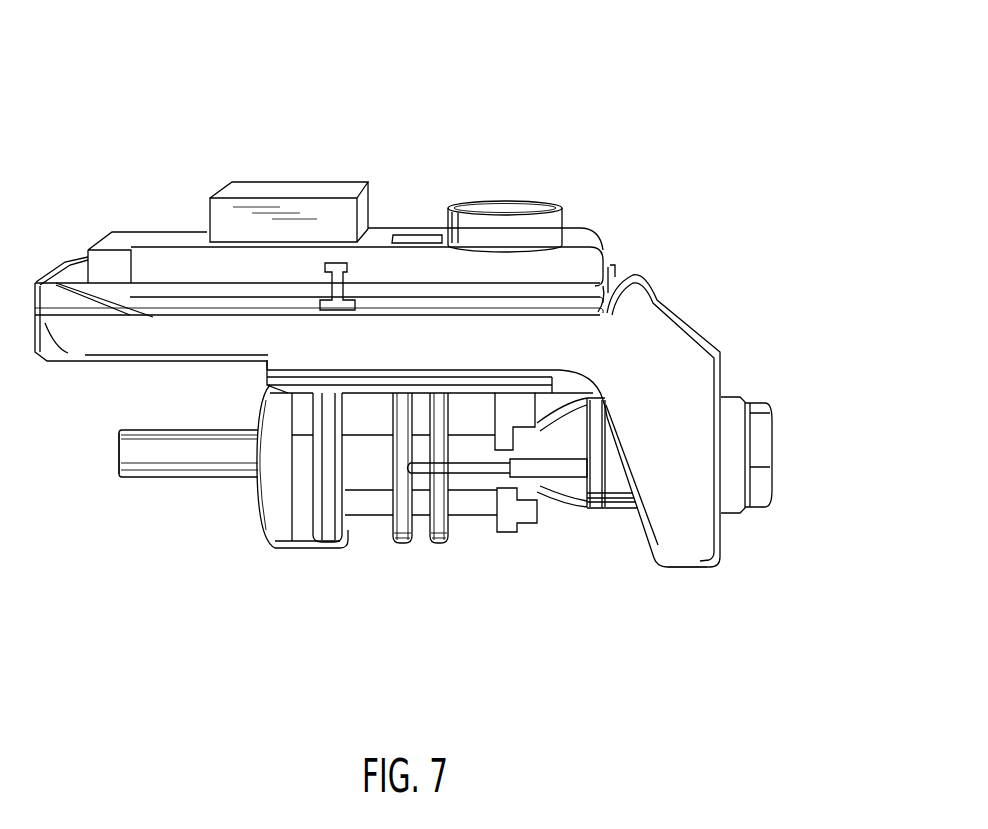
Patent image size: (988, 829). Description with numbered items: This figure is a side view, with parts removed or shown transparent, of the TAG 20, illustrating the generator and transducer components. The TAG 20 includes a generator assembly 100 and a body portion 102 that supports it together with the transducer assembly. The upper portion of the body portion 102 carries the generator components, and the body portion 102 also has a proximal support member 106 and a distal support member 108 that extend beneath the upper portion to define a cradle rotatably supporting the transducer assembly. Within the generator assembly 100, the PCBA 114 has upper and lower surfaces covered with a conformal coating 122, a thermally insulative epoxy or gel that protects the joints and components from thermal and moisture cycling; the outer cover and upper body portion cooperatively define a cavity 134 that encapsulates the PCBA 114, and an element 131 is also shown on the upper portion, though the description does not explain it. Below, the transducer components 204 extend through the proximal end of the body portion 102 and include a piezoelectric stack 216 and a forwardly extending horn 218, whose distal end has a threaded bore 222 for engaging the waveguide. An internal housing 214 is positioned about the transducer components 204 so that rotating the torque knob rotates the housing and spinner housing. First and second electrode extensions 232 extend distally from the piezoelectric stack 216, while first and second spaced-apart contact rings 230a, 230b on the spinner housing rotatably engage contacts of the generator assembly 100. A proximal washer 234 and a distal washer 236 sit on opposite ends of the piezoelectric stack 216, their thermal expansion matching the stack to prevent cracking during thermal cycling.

The TAG 20 is at (532, 100).
The generator assembly 100 is at (238, 148).
The cavity 134 is at (122, 194).
The sensor cap 131 is at (408, 218).
The conformal coating 122 is at (632, 278).
The PCBA 114 is at (165, 290).
The body portion 102 is at (600, 344).
The proximal support member 106 is at (688, 569).
The proximal washer 234 is at (737, 475).
The distal support member 108 is at (282, 533).
The internal housing 214 is at (368, 498).
The first contact ring 230a is at (405, 552).
The second contact ring 230b is at (440, 552).
The electrode extensions 232 is at (523, 467).
The transducer components 204 is at (507, 552).
The distal washer 236 is at (602, 507).
The piezoelectric stack 216 is at (622, 512).
The horn 218 is at (217, 467).
The threaded bore 222 is at (115, 462).